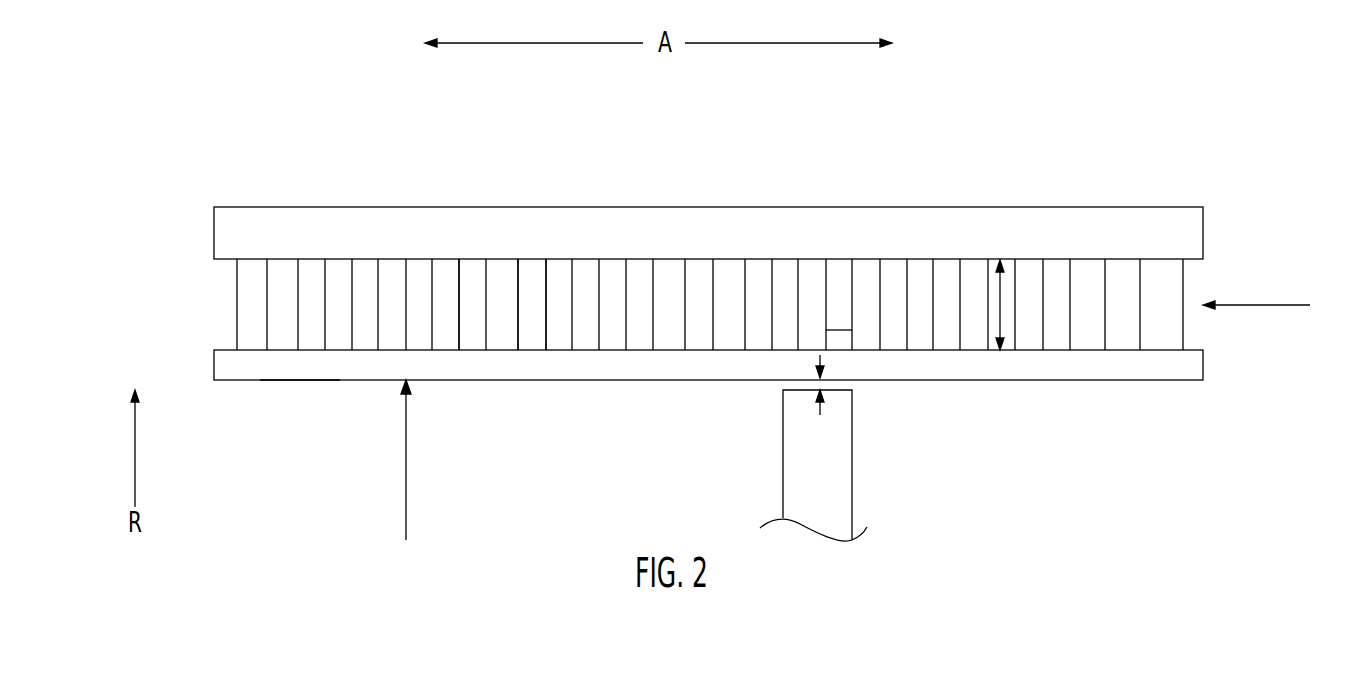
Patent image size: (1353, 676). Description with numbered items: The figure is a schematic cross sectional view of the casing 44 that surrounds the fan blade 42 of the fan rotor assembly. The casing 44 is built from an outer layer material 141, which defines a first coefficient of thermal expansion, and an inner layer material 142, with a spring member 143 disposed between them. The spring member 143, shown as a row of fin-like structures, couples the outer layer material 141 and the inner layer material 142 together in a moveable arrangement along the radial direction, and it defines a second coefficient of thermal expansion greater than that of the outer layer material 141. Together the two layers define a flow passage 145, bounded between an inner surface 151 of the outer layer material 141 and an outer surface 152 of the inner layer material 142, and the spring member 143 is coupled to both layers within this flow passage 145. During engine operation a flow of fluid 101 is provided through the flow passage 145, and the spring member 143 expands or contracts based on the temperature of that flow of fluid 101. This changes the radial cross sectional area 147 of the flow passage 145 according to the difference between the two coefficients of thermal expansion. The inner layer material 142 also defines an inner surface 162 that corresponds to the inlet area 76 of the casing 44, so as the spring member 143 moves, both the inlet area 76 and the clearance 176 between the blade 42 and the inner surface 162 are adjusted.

The casing 44 is at (1027, 112).
The flow of fluid 101 is at (1240, 305).
The outer layer material 141 is at (1020, 207).
The inner layer material 142 is at (1065, 380).
The spring member 143 is at (237, 303).
The flow passage 145 is at (834, 340).
The radial cross sectional area 147 is at (1000, 301).
The inner surface 151 is at (537, 272).
The outer surface 152 is at (450, 328).
The inner surface 162 is at (300, 392).
The clearance 176 is at (821, 412).
The fan blade 42 is at (815, 465).
The inlet area 76 is at (407, 463).